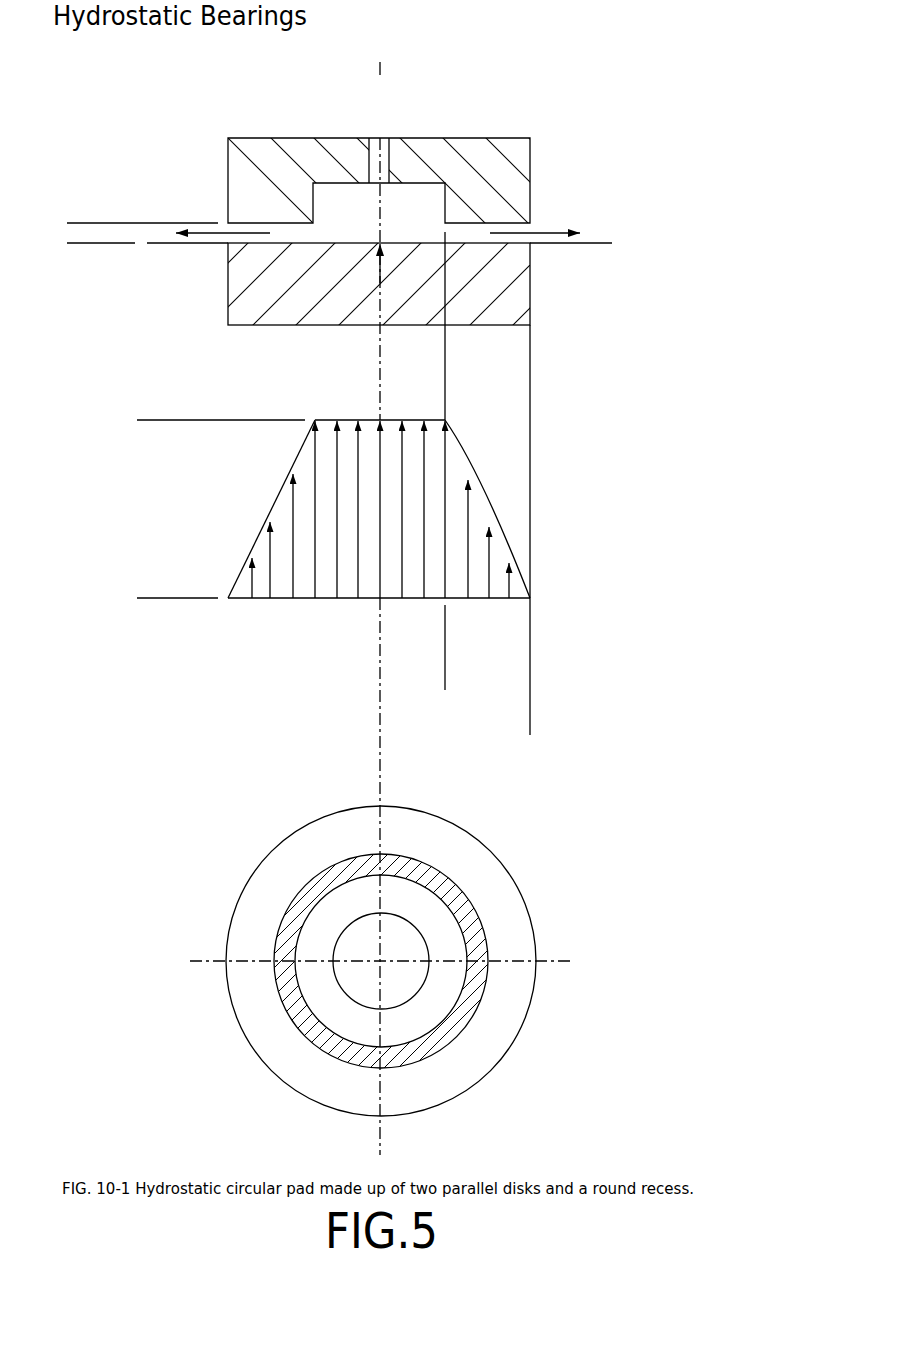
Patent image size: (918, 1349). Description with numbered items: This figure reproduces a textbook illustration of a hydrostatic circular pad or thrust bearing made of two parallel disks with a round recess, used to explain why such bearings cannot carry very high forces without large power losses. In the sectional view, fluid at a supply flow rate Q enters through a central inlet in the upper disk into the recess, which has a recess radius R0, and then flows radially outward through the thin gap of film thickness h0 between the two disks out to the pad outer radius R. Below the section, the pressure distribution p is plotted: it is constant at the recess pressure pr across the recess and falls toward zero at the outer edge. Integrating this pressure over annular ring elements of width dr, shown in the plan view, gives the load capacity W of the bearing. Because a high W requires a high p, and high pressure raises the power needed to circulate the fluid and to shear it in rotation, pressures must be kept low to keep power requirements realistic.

The supply flow rate Q is at (380, 137).
The film thickness h0 is at (80, 290).
The load capacity W is at (364, 373).
The recess pressure pr is at (151, 421).
The pressure distribution p is at (499, 512).
The recess radius R0 is at (444, 678).
The pad outer radius R is at (529, 727).
The radial ring element dr is at (318, 994).